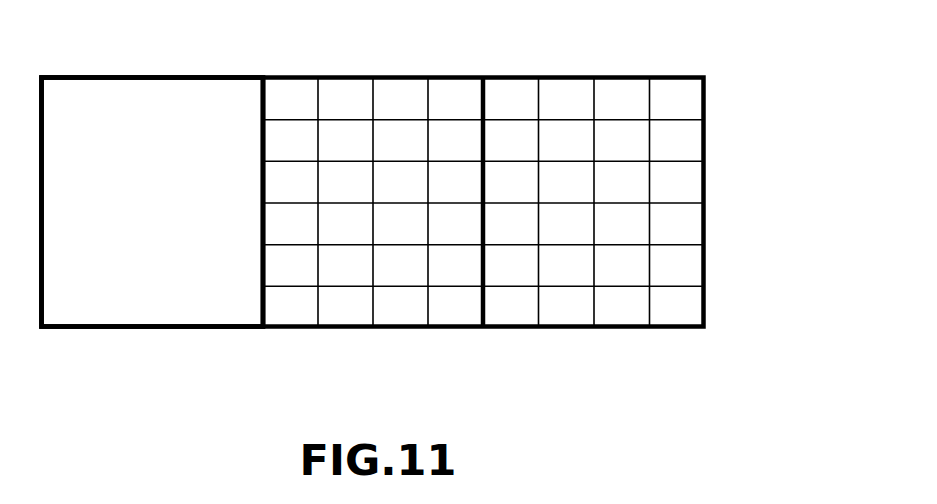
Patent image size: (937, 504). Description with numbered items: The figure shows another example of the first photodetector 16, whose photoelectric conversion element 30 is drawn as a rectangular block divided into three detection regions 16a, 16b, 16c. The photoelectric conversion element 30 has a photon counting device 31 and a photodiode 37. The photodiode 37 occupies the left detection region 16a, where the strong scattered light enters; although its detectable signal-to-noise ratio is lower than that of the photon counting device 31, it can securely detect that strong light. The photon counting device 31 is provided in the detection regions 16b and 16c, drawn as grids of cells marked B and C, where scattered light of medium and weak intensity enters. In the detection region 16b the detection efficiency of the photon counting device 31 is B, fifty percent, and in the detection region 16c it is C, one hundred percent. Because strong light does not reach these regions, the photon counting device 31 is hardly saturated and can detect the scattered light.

The first photodetector 16 is at (432, 215).
The photoelectric conversion element 30 is at (713, 156).
The detection region 16a is at (39, 62).
The detection region 16b is at (265, 62).
The detection region 16c is at (486, 62).
The photon counting device 31 is at (484, 215).
The photodiode 37 is at (142, 329).